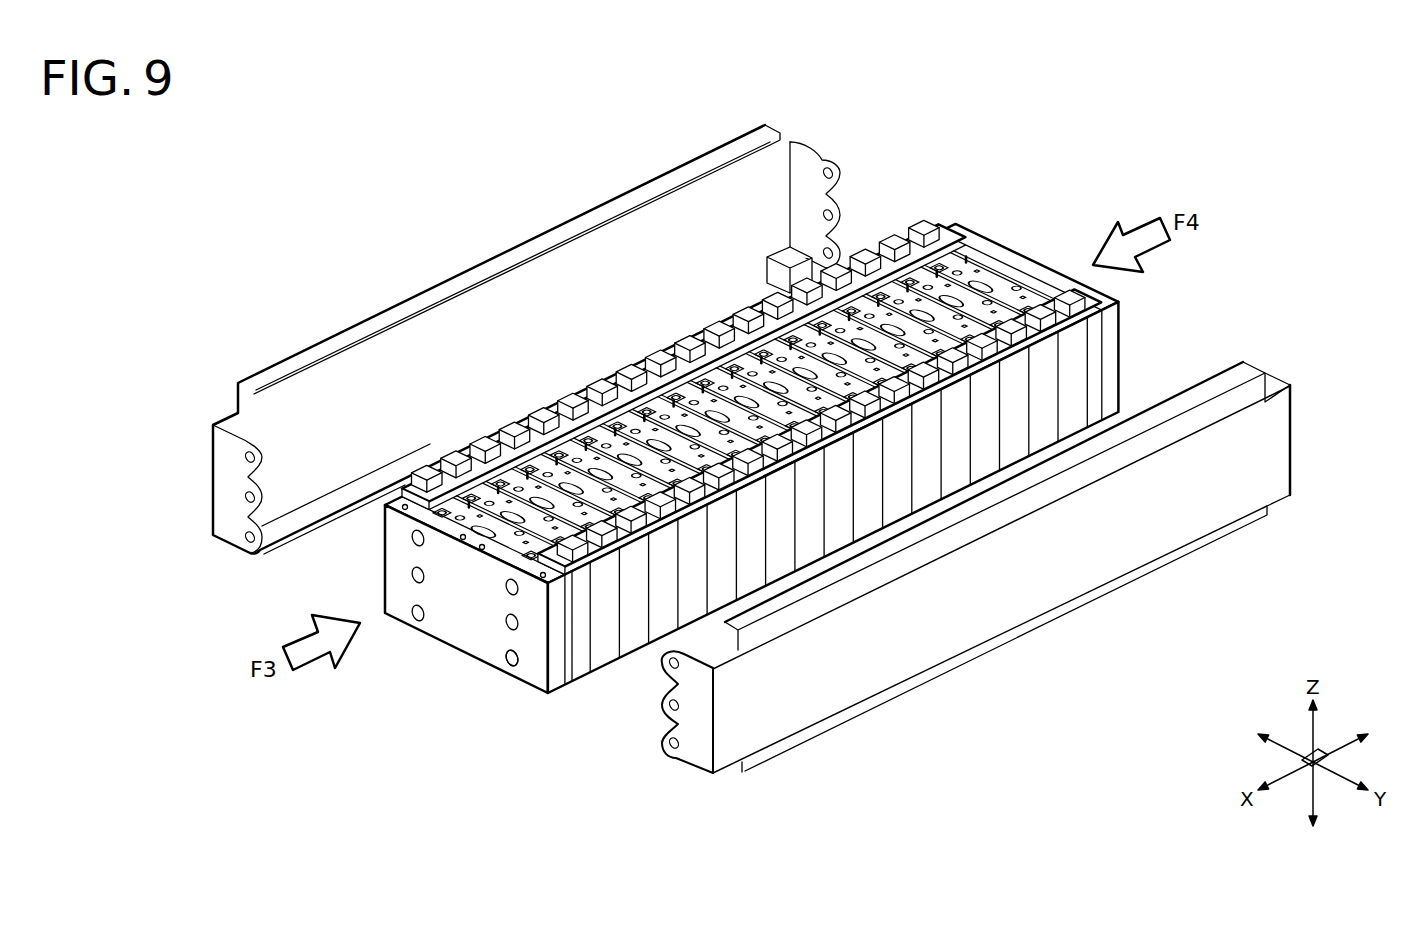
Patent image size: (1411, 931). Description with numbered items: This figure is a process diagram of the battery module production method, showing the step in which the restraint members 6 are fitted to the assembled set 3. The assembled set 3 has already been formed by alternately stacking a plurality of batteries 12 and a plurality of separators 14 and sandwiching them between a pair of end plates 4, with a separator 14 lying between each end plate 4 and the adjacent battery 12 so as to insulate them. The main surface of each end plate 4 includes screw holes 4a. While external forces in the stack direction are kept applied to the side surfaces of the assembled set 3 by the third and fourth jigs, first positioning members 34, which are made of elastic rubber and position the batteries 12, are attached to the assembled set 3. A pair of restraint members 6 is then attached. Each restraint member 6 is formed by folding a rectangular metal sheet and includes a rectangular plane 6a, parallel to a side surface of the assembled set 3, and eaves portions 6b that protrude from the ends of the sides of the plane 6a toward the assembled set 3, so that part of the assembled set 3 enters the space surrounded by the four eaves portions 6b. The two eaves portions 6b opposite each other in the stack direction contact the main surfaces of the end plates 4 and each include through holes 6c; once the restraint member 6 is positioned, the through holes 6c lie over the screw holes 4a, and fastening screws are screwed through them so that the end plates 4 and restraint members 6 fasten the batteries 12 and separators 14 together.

The assembled set 3 is at (783, 460).
The end plate 4 is at (1120, 372).
The screw hole 4a is at (512, 660).
The restraint member 6 is at (212, 478).
The plane 6a is at (1213, 512).
The eaves portion 6b is at (1245, 370).
The through hole 6c is at (666, 748).
The battery 12 is at (987, 265).
The separator 14 is at (952, 223).
The first positioning member 34 is at (928, 222).